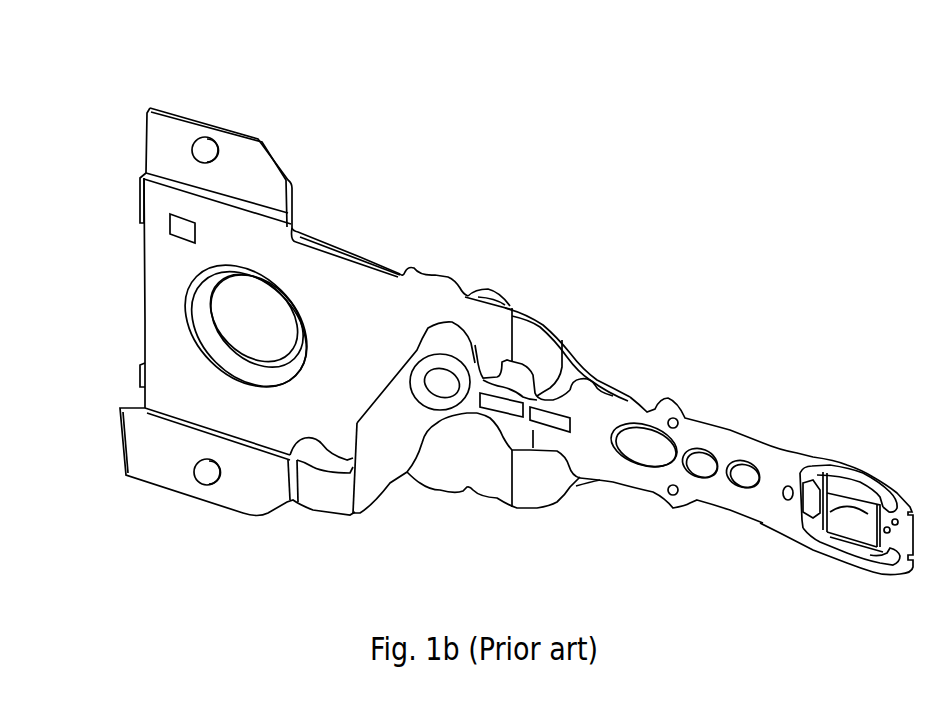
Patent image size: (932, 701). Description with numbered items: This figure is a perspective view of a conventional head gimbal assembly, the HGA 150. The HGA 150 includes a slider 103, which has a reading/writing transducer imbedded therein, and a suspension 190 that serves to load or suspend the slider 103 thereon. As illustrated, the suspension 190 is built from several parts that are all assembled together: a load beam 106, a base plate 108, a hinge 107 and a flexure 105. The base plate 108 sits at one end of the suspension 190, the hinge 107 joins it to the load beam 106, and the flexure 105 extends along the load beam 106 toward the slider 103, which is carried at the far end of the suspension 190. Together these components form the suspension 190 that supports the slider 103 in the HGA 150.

The HGA 150 is at (61, 67).
The suspension 190 is at (730, 220).
The base plate 108 is at (488, 293).
The hinge 107 is at (526, 328).
The load beam 106 is at (573, 370).
The flexure 105 is at (708, 437).
The slider 103 is at (845, 525).